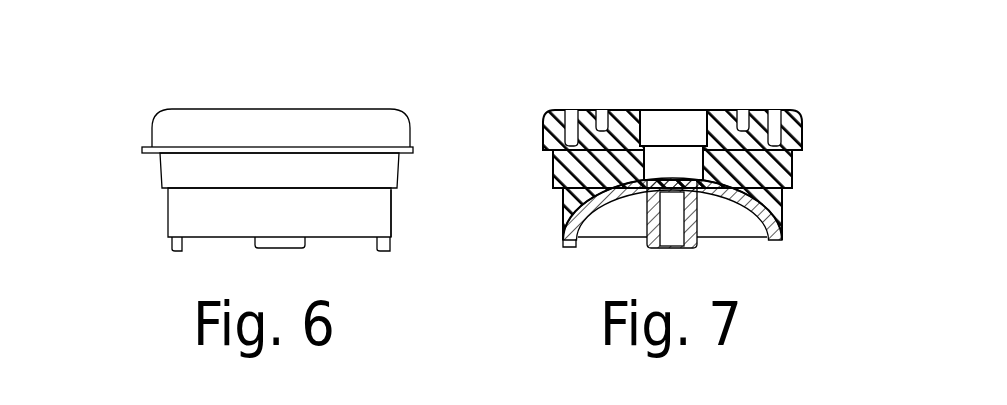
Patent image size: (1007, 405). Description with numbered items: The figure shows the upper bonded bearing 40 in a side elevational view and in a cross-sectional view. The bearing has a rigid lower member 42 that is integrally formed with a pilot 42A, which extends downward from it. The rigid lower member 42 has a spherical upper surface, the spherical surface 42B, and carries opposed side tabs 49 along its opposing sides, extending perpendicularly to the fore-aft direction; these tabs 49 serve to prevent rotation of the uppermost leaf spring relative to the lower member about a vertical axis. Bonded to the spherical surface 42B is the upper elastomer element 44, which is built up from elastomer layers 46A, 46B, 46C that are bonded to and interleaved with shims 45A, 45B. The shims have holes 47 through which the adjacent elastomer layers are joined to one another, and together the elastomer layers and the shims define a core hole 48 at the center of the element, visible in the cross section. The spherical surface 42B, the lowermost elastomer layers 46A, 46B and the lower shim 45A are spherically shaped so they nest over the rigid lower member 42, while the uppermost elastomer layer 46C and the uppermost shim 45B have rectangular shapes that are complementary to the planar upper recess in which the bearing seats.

In FIG. 6, the upper bonded bearing 40 is at (333, 95).
In FIG. 7, the upper bonded bearing 40 is at (722, 99).
In FIG. 7, the rigid lower member 42 is at (790, 226).
In FIG. 6, the pilot 42A is at (305, 242).
In FIG. 7, the pilot 42A is at (700, 238).
In FIG. 7, the spherical surface 42B is at (558, 202).
In FIG. 6, the upper elastomer element 44 is at (400, 200).
In FIG. 7, the upper elastomer element 44 is at (552, 179).
In FIG. 7, the shim 45A is at (792, 188).
In FIG. 6, the uppermost shim 45B is at (150, 150).
In FIG. 7, the uppermost shim 45B is at (802, 150).
In FIG. 6, the elastomer layer 46A is at (180, 210).
In FIG. 7, the elastomer layer 46A is at (782, 211).
In FIG. 6, the elastomer layer 46B is at (168, 168).
In FIG. 7, the elastomer layer 46B is at (556, 160).
In FIG. 6, the uppermost elastomer layer 46C is at (172, 121).
In FIG. 7, the uppermost elastomer layer 46C is at (548, 125).
In FIG. 7, the holes 47 is at (601, 155).
In FIG. 7, the core hole 48 is at (707, 128).
In FIG. 6, the side tabs 49 is at (168, 252).
In FIG. 7, the side tabs 49 is at (562, 250).